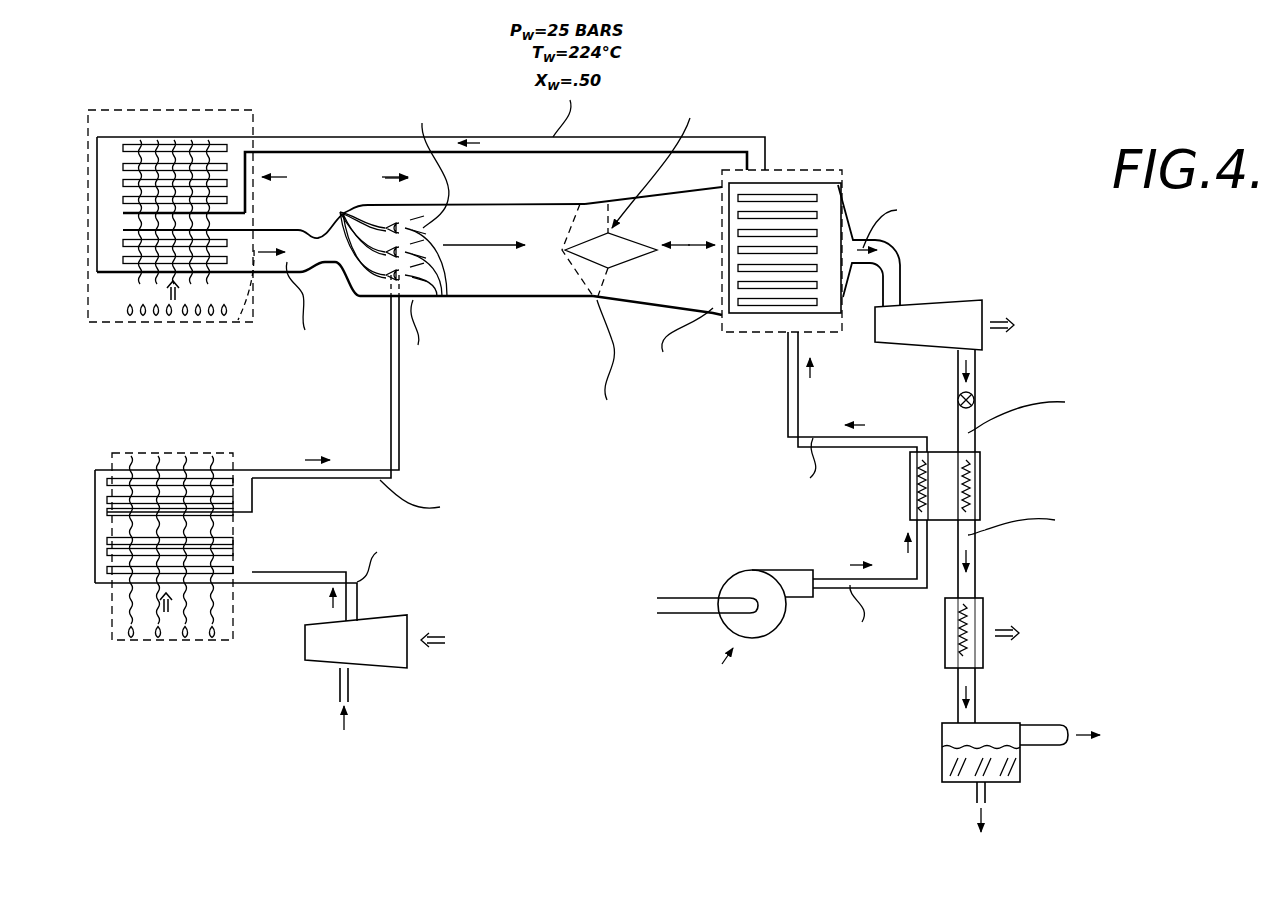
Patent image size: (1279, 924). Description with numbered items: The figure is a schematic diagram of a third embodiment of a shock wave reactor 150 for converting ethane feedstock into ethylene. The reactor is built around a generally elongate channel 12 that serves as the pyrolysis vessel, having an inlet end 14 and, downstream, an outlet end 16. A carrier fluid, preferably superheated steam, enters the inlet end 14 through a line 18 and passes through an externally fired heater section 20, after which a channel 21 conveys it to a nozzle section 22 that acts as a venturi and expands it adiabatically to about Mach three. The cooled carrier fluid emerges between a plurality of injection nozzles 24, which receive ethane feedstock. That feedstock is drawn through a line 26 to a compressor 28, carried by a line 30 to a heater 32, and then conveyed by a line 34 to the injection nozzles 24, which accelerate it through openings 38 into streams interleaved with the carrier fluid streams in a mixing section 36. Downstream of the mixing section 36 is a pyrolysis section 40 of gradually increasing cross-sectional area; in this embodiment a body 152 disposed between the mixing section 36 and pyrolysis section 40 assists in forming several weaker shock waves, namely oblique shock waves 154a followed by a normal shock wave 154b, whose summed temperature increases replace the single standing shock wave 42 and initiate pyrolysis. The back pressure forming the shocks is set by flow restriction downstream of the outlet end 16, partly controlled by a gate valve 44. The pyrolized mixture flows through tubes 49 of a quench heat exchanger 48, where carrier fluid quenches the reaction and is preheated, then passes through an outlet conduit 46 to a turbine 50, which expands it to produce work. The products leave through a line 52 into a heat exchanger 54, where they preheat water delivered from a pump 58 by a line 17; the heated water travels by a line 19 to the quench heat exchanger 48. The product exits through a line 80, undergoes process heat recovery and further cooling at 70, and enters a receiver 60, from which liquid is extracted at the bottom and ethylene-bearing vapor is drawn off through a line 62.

The channel 12 is at (536, 296).
The inlet end 14 is at (238, 320).
The outlet end 16 is at (715, 198).
The line 17 is at (837, 567).
The line 18 is at (335, 140).
The line 19 is at (800, 395).
The heater section 20 is at (115, 308).
The channel 21 is at (266, 275).
The nozzle section 22 is at (318, 250).
The injection nozzles 24 is at (342, 214).
The line 26 is at (352, 680).
The compressor 28 is at (317, 663).
The line 30 is at (300, 570).
The heater 32 is at (227, 622).
The line 34 is at (303, 480).
The mixing section 36 is at (519, 228).
The openings 38 is at (445, 298).
The pyrolysis section 40 is at (684, 221).
The shock wave 42 is at (608, 290).
The gate valve 44 is at (978, 392).
The outlet conduit 46 is at (873, 264).
The quench heat exchanger 48 is at (832, 174).
The tubes 49 is at (795, 278).
The turbine 50 is at (963, 298).
The line 52 is at (960, 420).
The heat exchanger 54 is at (982, 463).
The pump 58 is at (747, 587).
The receiver 60 is at (942, 767).
The line 62 is at (1050, 732).
The process heat recovery and cooling 70 is at (945, 648).
The line 80 is at (978, 580).
The shock wave reactor 150 is at (618, 705).
The body 152 is at (616, 263).
The oblique shock waves 154a is at (582, 203).
The normal shock wave 154b is at (609, 204).